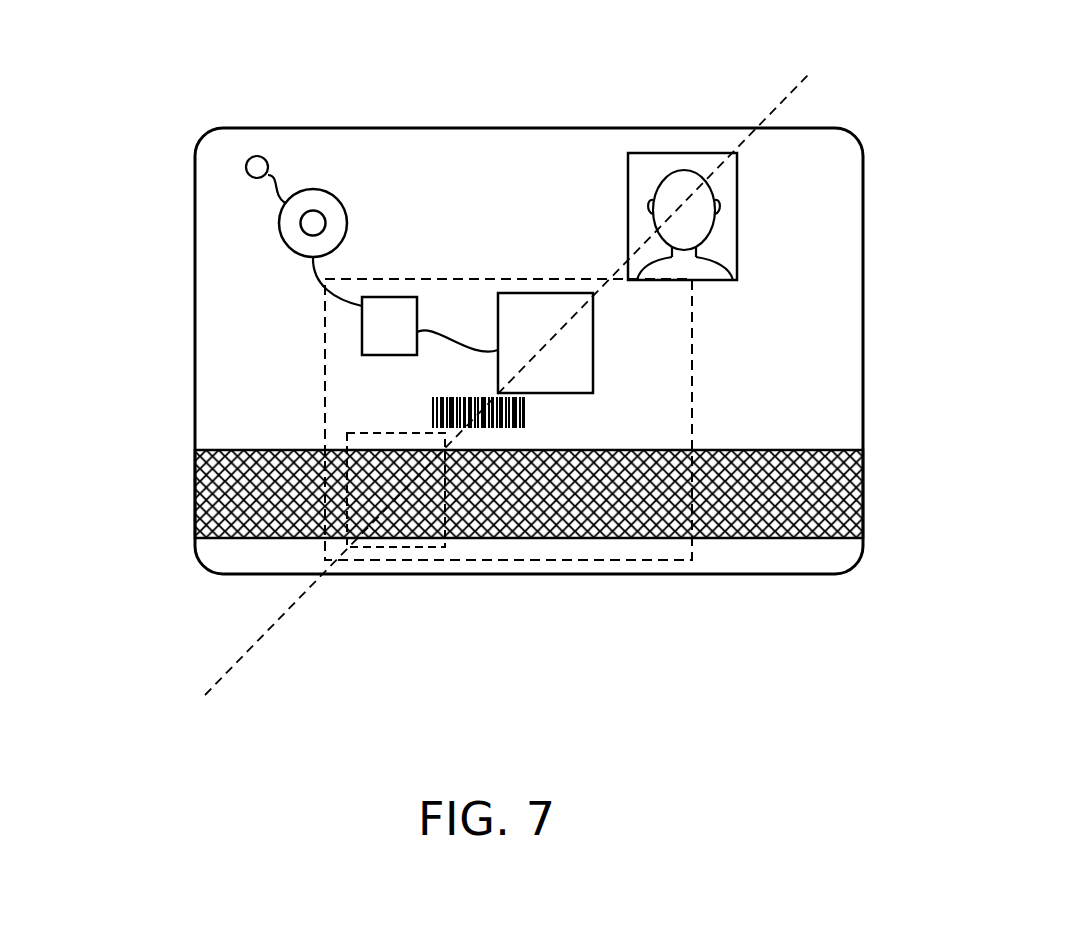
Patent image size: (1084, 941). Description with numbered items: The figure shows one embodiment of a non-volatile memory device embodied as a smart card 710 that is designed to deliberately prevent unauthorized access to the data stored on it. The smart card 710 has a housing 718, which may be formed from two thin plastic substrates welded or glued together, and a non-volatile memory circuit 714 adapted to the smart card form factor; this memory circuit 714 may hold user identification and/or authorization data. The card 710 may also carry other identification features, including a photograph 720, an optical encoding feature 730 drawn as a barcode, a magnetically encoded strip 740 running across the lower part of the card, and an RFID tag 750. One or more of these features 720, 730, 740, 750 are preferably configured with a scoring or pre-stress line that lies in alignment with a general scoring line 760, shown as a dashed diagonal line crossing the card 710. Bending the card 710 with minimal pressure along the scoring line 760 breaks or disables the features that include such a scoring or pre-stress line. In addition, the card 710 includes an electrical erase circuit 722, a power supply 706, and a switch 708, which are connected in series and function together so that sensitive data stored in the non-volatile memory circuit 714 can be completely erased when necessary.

The power supply 706 is at (258, 156).
The switch 708 is at (313, 189).
The smart card 710 is at (168, 97).
The non-volatile memory circuit 714 is at (486, 296).
The housing 718 is at (193, 267).
The photograph 720 is at (748, 215).
The electrical erase circuit 722 is at (362, 330).
The optical encoding feature 730 is at (432, 412).
The magnetically encoded strip 740 is at (865, 500).
The RFID tag 750 is at (347, 440).
The general scoring line 760 is at (757, 130).